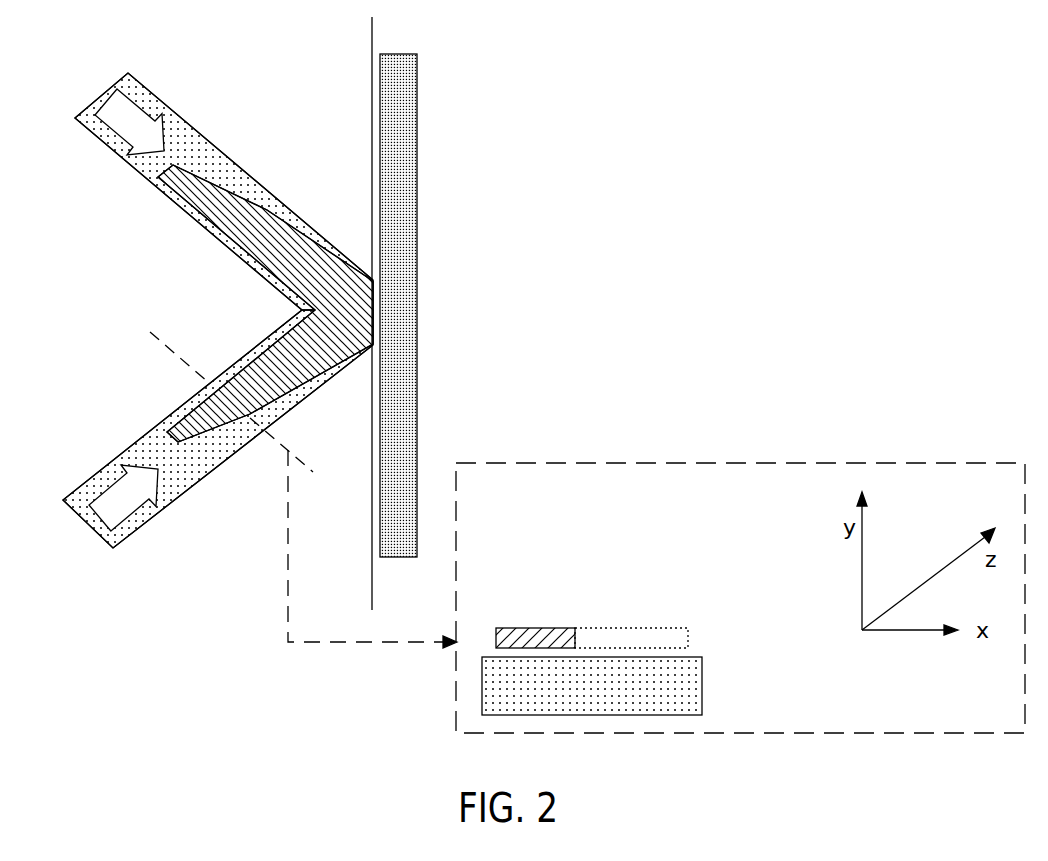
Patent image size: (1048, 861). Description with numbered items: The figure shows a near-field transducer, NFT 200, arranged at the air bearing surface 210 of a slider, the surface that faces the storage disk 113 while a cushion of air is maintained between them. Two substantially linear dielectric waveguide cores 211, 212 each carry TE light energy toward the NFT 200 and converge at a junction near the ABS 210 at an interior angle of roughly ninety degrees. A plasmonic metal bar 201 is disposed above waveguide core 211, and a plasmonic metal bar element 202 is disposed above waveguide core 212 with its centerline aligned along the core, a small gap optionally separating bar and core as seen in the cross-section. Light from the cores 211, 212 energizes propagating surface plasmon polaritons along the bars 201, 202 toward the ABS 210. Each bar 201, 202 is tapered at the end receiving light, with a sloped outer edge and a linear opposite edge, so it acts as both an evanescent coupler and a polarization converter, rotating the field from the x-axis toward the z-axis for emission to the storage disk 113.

The NFT 200 is at (760, 71).
The plasmonic metal bar 201 is at (200, 214).
The plasmonic metal bar element 202 is at (231, 437).
The air bearing surface 210 is at (372, 37).
The dielectric waveguide core 211 is at (146, 98).
The dielectric waveguide core 212 is at (175, 492).
The storage disk 113 is at (417, 305).